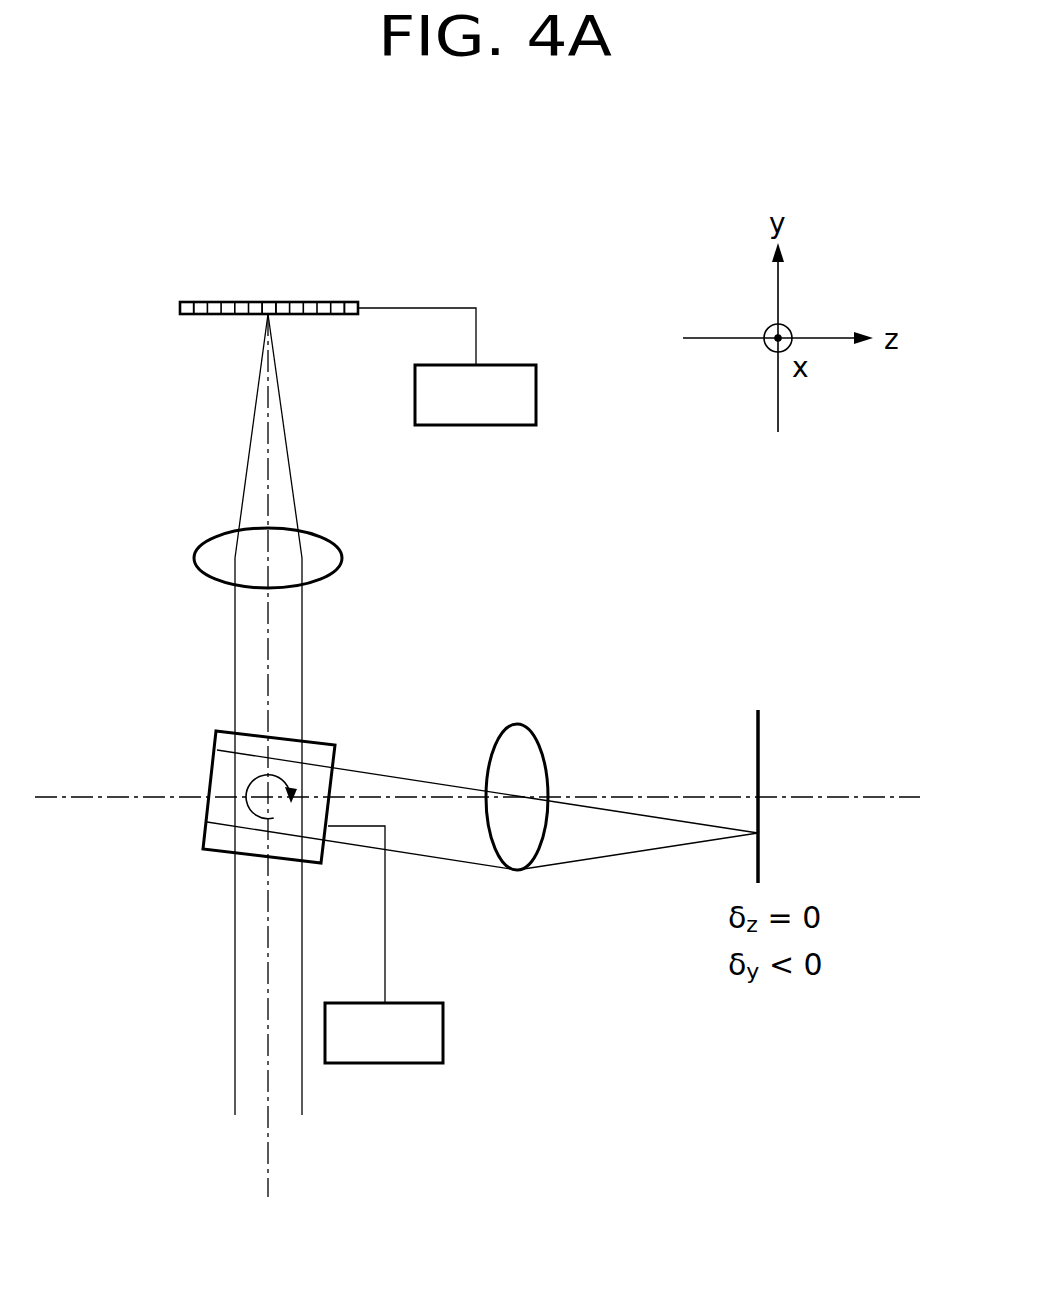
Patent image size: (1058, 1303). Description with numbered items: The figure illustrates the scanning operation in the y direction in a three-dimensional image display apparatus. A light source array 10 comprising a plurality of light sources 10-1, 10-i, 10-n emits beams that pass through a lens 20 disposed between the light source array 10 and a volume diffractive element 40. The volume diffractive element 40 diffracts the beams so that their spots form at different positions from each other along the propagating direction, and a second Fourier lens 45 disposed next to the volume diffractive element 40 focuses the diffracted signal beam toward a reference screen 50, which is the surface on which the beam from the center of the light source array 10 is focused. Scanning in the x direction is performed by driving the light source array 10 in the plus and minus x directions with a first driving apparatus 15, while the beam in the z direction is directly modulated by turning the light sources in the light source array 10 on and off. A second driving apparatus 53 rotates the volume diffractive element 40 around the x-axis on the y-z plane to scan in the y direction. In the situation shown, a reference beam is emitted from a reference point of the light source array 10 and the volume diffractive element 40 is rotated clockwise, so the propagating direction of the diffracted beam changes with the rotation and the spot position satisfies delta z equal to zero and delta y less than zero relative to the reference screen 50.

The light source array 10 is at (182, 326).
The light source 10-1 is at (187, 300).
The light source 10-i is at (269, 300).
The light source 10-n is at (351, 300).
The first driving apparatus 15 is at (531, 396).
The lens 20 is at (343, 558).
The volume diffractive element 40 is at (217, 851).
The second Fourier lens 45 is at (517, 723).
The reference screen 50 is at (760, 731).
The second driving apparatus 53 is at (440, 1033).